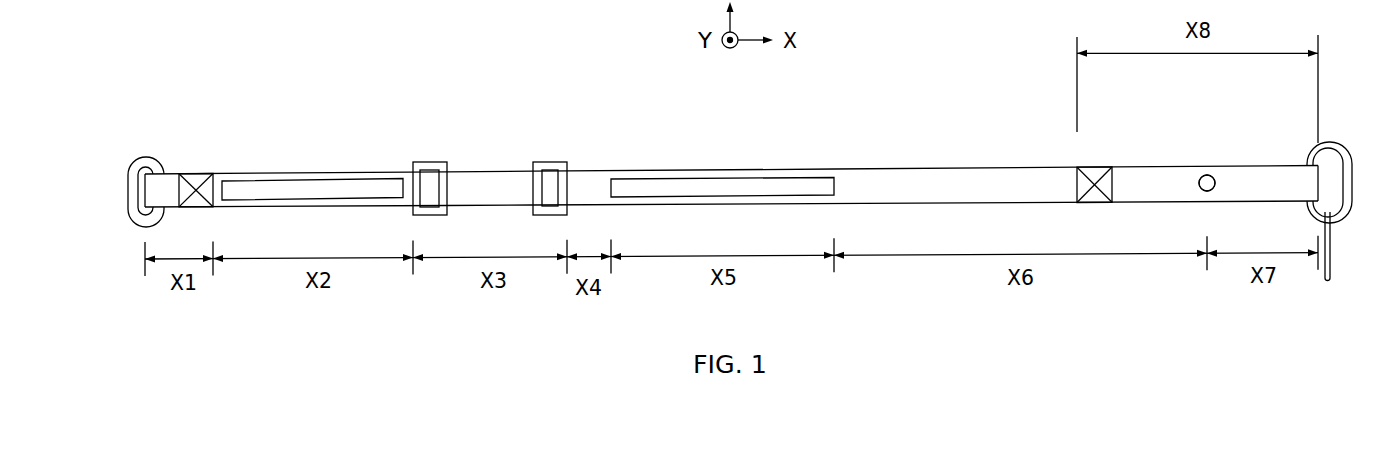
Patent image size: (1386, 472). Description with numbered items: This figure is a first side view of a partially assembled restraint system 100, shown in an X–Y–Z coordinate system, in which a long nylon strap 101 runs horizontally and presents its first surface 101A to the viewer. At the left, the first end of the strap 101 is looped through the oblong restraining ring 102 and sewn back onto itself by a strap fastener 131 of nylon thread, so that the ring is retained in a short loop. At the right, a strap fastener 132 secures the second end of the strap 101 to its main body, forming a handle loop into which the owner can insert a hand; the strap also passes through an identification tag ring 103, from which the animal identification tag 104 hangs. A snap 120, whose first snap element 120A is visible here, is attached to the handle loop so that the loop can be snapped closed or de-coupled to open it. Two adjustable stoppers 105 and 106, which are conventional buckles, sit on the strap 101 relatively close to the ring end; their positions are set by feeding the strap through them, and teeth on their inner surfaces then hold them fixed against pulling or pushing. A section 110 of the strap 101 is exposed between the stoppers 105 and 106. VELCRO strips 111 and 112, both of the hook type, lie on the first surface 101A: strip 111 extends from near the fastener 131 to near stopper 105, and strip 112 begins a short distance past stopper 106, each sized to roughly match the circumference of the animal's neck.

The restraint system 100 is at (627, 117).
The strap 101 is at (852, 168).
The first surface 101A is at (920, 177).
The restraining ring 102 is at (145, 156).
The identification tag ring 103 is at (1335, 145).
The identification tag 104 is at (1330, 280).
The adjustable stopper 105 is at (430, 168).
The adjustable stopper 106 is at (550, 168).
The strap section 110 is at (488, 175).
The VELCRO strip 111 is at (265, 187).
The VELCRO strip 112 is at (730, 185).
The snap 120 is at (1201, 174).
The first snap element 120A is at (1211, 176).
The strap fastener 131 is at (197, 178).
The strap fastener 132 is at (1095, 173).